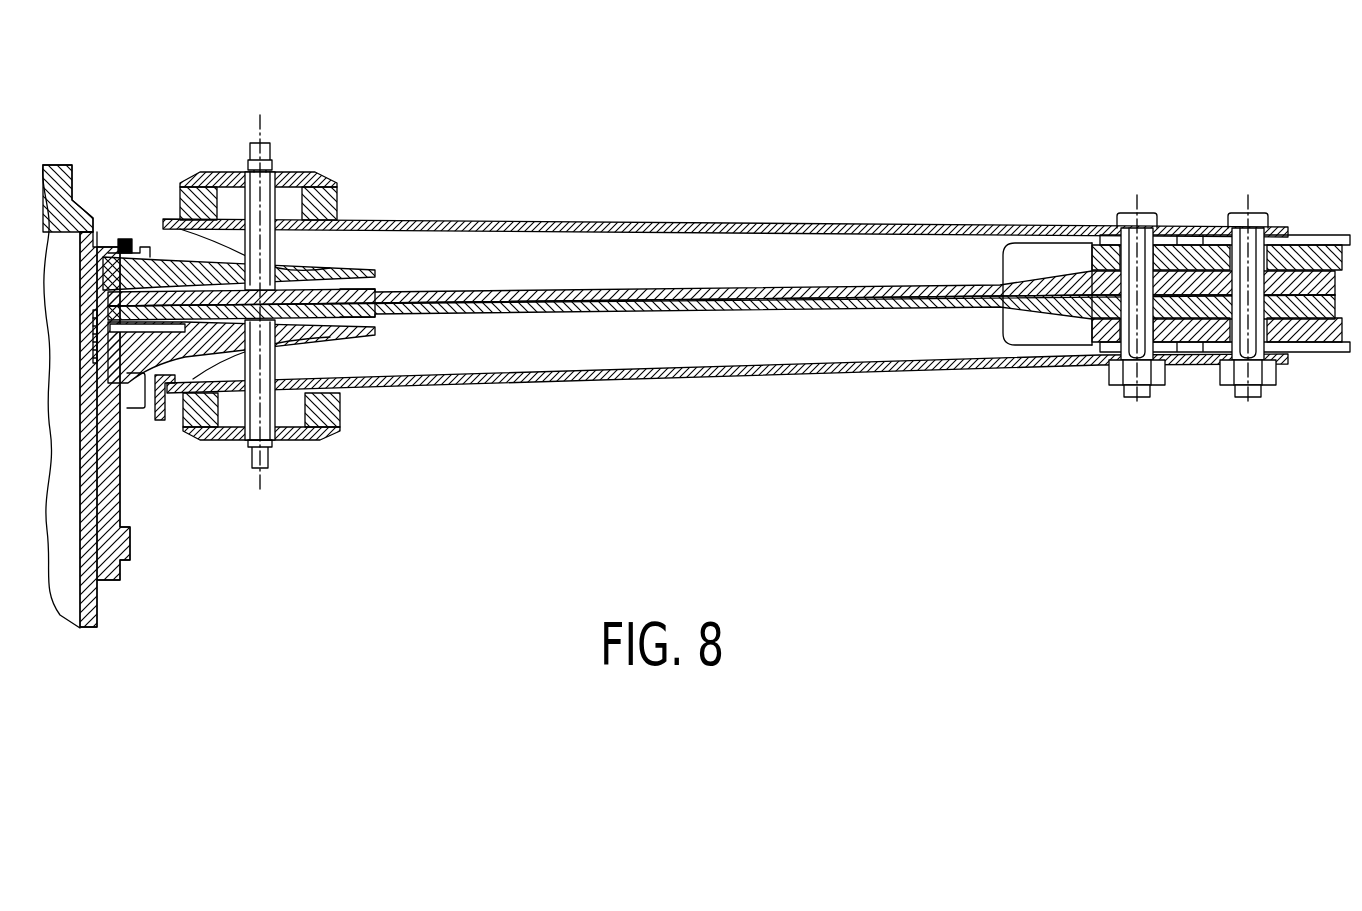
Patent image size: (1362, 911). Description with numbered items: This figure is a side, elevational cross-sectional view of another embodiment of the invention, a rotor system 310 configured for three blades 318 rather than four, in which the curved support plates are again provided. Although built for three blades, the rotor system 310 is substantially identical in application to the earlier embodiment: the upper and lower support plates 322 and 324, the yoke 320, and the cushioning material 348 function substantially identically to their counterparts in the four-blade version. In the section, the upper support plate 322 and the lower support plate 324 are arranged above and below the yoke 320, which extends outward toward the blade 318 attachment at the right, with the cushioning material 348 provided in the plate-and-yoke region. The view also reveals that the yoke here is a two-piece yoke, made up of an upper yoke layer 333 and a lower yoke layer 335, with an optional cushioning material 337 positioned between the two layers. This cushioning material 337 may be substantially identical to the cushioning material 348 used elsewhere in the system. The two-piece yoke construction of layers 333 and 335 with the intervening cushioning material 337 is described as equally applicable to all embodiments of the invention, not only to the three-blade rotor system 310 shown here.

The rotor system 310 is at (826, 112).
The blades 318 is at (1307, 238).
The yoke 320 is at (603, 288).
The upper support plate 322 is at (358, 267).
The lower support plate 324 is at (350, 343).
The upper yoke layer 333 is at (762, 293).
The lower yoke layer 335 is at (790, 303).
The cushioning material 337 is at (877, 297).
The cushioning material 348 is at (380, 287).